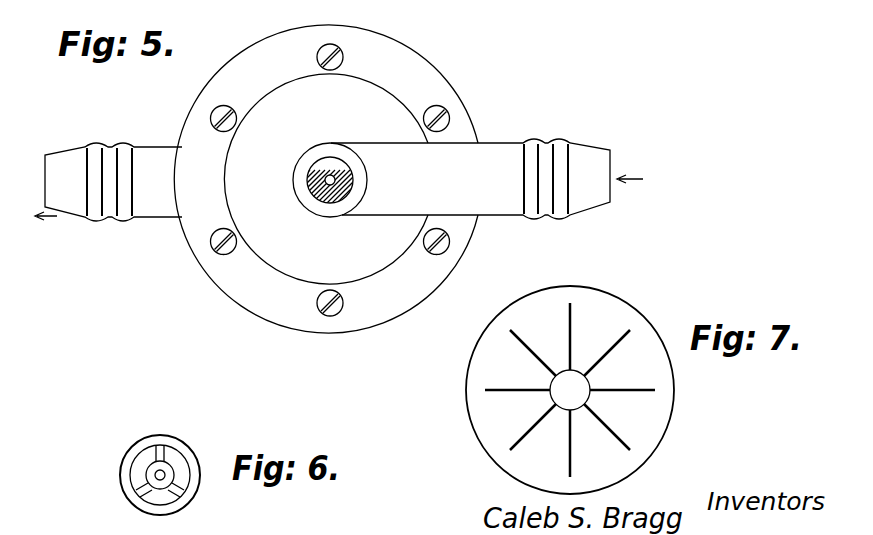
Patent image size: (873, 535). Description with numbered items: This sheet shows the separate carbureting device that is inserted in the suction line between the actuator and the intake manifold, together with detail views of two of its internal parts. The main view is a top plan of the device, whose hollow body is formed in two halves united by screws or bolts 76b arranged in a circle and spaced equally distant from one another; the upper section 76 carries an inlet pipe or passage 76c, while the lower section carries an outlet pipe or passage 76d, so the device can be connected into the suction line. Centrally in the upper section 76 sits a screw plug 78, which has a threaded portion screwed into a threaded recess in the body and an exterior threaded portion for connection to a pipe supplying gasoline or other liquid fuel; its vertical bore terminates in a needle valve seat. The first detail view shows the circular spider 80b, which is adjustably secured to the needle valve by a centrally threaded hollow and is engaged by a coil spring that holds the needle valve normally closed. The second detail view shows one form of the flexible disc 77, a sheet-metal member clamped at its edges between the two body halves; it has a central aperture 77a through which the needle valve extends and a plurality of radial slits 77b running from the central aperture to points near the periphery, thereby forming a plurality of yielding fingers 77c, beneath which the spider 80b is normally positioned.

In FIG. 5, the upper section of hollow body 76 is at (326, 179).
In FIG. 5, the screws or bolts 76b is at (221, 107).
In FIG. 5, the inlet pipe or passage 76c is at (495, 157).
In FIG. 5, the outlet pipe or passage 76d is at (140, 162).
In FIG. 5, the screw plug 78 is at (322, 163).
In FIG. 6, the circular spider 80b is at (172, 443).
In FIG. 7, the flexible disc 77 is at (665, 393).
In FIG. 7, the central aperture 77a is at (570, 390).
In FIG. 7, the radial slits 77b is at (508, 388).
In FIG. 7, the yielding fingers 77c is at (577, 390).